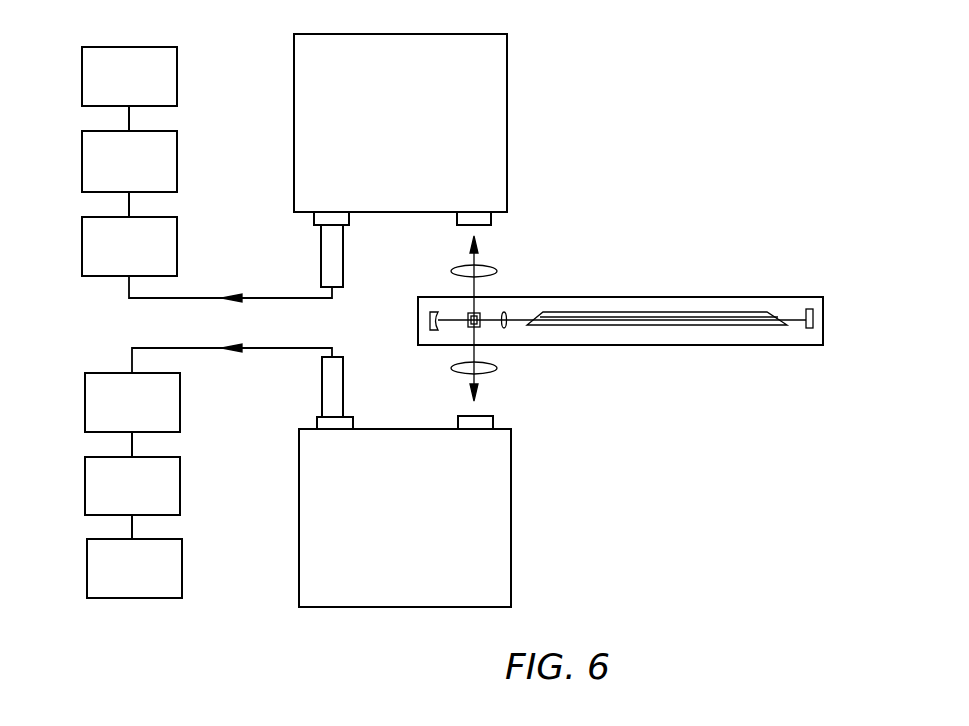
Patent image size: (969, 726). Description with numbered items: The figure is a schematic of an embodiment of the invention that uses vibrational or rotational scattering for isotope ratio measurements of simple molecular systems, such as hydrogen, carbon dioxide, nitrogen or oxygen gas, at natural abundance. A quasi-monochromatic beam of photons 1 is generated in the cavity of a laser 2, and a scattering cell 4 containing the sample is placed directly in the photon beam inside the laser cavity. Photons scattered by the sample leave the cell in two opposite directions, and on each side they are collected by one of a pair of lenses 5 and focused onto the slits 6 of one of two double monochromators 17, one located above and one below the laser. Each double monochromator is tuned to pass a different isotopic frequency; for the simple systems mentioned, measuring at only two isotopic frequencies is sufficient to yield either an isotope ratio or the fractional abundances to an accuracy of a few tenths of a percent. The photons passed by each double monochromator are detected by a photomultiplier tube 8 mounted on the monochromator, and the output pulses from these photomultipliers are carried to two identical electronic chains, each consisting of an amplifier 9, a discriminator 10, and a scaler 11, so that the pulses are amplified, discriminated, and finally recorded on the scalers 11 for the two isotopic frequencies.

The beam of photons 1 is at (485, 325).
The laser 2 is at (535, 297).
The scattering cell 4 is at (466, 328).
The lenses 5 is at (480, 266).
The slits 6 is at (491, 222).
The photomultiplier tube 8 is at (344, 272).
The amplifiers 9 is at (82, 249).
The discriminators 10 is at (82, 163).
The scalers 11 is at (82, 85).
The double monochromators 17 is at (507, 190).